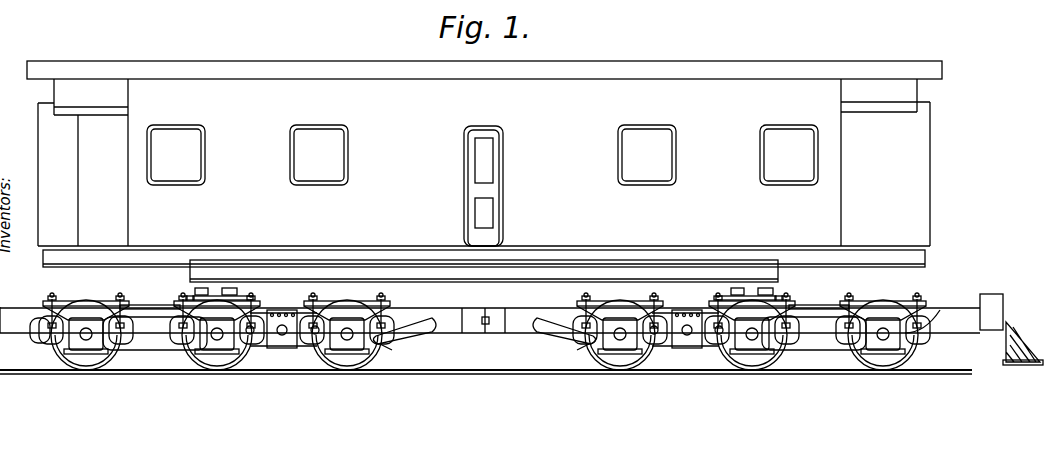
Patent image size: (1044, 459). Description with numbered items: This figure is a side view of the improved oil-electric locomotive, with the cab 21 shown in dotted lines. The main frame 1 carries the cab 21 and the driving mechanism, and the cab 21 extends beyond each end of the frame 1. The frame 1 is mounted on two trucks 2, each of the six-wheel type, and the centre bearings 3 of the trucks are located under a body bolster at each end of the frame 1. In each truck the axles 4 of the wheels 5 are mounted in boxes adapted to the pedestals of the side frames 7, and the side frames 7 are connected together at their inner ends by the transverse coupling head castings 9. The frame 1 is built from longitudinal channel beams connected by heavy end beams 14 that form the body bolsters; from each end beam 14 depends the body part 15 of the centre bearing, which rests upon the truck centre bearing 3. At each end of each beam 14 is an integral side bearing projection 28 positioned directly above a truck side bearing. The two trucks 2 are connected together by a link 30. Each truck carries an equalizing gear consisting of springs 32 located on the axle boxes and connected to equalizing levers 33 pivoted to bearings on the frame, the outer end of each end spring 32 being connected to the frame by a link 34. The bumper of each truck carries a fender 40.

The frame 1 is at (484, 271).
The truck 2 is at (140, 303).
The centre bearing 3 is at (243, 301).
The axle 4 is at (392, 348).
The wheel 5 is at (89, 358).
The side frame 7 is at (430, 312).
The transverse coupling head casting 9 is at (470, 308).
The end beam 14 is at (250, 294).
The body part of the centre bearing 15 is at (192, 296).
The cab 21 is at (484, 164).
The side bearing projection 28 is at (218, 290).
The link 30 is at (485, 325).
The spring 32 is at (62, 301).
The equalizing lever 33 is at (136, 336).
The link 34 is at (46, 308).
The fender 40 is at (1011, 329).